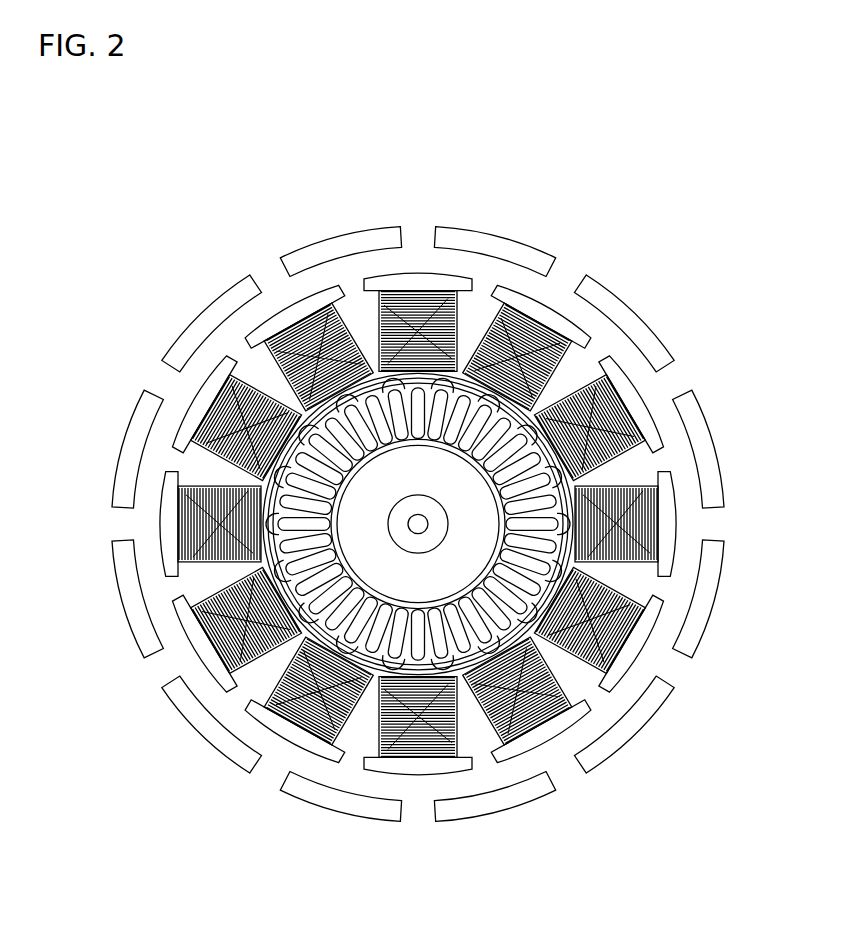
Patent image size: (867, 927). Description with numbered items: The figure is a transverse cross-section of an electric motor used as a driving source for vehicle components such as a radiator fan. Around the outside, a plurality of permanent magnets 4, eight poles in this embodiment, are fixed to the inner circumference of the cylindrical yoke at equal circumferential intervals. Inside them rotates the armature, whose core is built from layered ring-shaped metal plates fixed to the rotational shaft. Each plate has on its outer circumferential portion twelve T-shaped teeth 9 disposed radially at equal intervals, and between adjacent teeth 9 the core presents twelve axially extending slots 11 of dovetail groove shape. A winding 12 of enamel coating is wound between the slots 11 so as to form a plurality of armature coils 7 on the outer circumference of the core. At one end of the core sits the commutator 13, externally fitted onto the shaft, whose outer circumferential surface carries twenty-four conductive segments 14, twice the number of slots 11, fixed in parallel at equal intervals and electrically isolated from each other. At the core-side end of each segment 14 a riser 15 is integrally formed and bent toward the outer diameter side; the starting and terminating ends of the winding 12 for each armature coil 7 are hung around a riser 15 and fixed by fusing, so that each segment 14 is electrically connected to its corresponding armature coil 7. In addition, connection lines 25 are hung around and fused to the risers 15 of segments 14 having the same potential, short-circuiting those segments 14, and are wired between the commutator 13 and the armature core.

The permanent magnets 4 is at (596, 278).
The armature coil 7 is at (518, 302).
The T-shaped teeth 9 is at (668, 554).
The slots 11 is at (198, 583).
The winding 12 is at (530, 717).
The commutator 13 is at (378, 563).
The segments 14 is at (442, 610).
The riser 15 is at (363, 427).
The connection lines 25 is at (378, 672).